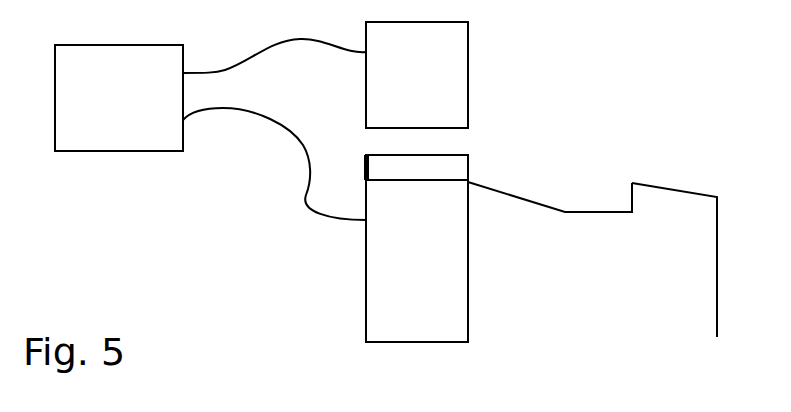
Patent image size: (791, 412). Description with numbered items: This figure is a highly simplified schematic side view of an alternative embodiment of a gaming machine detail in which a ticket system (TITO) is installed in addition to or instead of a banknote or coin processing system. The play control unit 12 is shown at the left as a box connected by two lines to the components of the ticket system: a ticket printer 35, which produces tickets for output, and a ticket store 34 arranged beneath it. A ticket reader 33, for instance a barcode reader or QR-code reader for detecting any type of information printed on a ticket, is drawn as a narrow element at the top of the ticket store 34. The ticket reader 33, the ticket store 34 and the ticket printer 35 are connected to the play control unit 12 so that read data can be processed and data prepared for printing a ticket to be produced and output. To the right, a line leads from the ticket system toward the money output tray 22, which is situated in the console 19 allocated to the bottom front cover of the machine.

The play control unit 12 is at (103, 110).
The ticket printer 35 is at (417, 75).
The ticket store 34 is at (417, 248).
The ticket reader 33 is at (453, 167).
The money output tray 22 is at (565, 212).
The console 19 is at (680, 190).